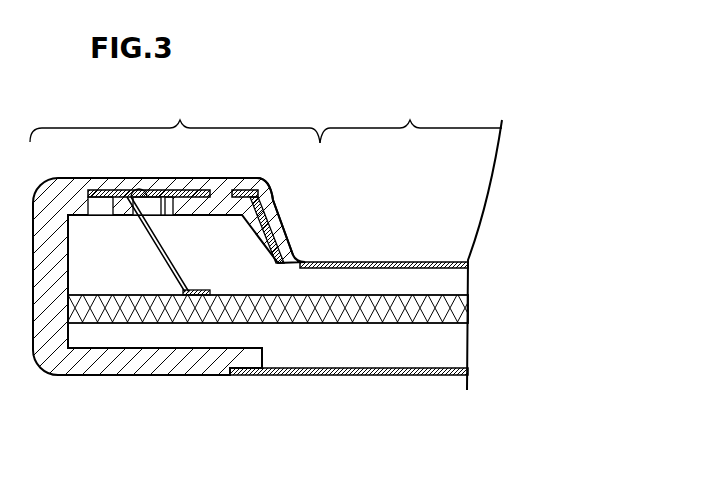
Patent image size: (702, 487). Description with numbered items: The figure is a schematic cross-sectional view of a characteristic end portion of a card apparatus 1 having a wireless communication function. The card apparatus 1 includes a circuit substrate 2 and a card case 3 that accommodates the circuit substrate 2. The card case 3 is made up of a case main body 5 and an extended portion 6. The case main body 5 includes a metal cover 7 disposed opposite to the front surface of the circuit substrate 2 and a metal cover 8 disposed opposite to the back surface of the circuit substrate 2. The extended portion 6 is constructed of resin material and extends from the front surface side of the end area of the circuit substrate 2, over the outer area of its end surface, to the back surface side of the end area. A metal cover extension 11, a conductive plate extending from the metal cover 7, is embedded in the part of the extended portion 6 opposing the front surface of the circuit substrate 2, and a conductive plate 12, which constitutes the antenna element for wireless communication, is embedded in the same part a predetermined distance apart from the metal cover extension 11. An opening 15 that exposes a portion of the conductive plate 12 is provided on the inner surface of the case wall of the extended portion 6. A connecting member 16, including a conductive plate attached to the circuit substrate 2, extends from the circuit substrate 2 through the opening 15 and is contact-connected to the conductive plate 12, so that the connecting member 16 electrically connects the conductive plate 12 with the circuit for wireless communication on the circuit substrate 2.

The card apparatus 1 is at (533, 158).
The circuit substrate 2 is at (317, 315).
The card case 3 is at (184, 380).
The case main body 5 is at (411, 118).
The extended portion 6 is at (175, 118).
The metal cover 7 is at (400, 262).
The metal cover 8 is at (356, 376).
The metal cover extension 11 is at (272, 226).
The conductive plate 12 is at (168, 192).
The opening 15 is at (163, 204).
The connecting member 16 is at (174, 268).